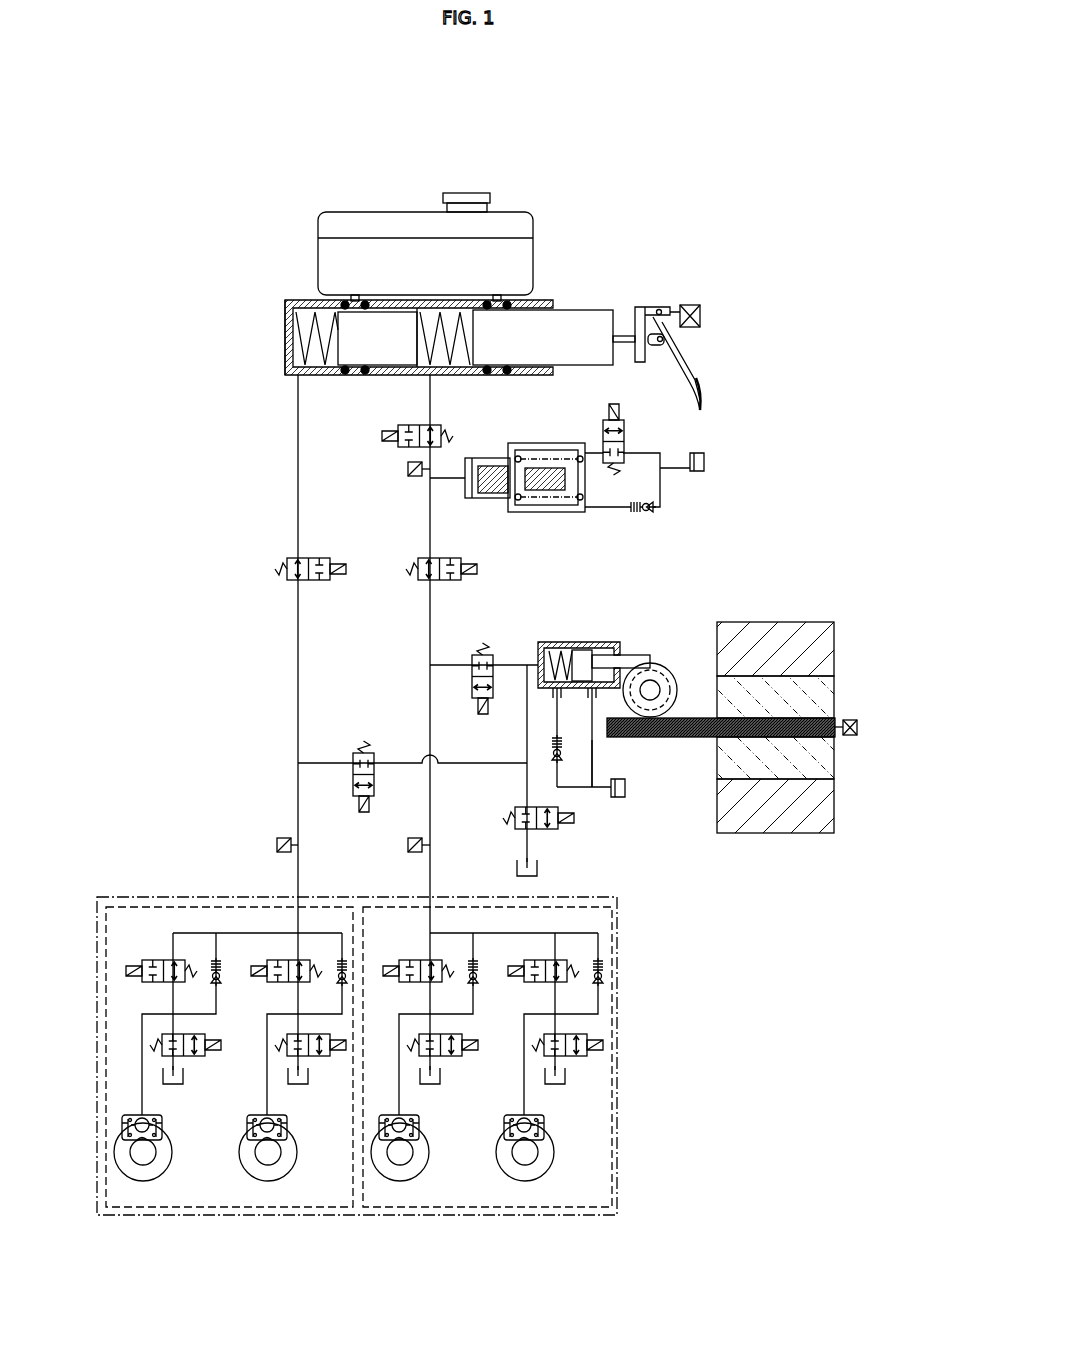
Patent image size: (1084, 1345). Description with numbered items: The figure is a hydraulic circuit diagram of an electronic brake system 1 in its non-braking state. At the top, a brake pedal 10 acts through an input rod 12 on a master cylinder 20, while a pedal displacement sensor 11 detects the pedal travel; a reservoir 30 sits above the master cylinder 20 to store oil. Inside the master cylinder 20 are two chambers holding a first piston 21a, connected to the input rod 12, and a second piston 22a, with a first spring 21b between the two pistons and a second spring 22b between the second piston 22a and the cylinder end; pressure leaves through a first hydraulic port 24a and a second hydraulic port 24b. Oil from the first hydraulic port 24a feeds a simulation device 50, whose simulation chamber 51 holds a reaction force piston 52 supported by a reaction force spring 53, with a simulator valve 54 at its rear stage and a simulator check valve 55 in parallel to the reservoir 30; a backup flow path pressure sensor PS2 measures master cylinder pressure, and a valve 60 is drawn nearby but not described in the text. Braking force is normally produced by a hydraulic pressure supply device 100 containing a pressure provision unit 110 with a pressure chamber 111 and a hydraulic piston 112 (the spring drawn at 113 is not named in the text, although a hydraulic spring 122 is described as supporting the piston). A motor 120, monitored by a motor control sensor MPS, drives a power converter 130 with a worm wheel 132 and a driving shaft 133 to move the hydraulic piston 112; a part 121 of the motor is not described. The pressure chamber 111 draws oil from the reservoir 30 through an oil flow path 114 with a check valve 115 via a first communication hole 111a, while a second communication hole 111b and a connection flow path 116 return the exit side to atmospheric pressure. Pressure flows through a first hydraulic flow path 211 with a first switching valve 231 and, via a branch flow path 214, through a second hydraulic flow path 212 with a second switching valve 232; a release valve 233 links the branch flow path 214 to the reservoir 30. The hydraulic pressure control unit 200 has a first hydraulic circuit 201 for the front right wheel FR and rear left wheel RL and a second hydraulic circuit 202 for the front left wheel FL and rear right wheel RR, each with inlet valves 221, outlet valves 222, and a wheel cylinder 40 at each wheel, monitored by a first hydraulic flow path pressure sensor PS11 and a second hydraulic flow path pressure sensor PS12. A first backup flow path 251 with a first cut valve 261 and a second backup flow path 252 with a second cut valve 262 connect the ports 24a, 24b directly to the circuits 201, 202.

The electronic brake system 1 is at (529, 131).
The brake pedal 10 is at (682, 350).
The pedal displacement sensor 11 is at (697, 312).
The input rod 12 is at (626, 334).
The master cylinder 20 is at (296, 300).
The first piston 21a is at (580, 320).
The first spring 21b is at (465, 350).
The second piston 22a is at (360, 370).
The second spring 22b is at (292, 346).
The first hydraulic port 24a is at (422, 376).
The second hydraulic port 24b is at (290, 376).
The reservoir 30 is at (356, 212).
The wheel cylinder 40 is at (163, 1130).
The simulation device 50 is at (560, 464).
The simulation chamber 51 is at (550, 450).
The reaction force piston 52 is at (486, 460).
The reaction force spring 53 is at (520, 445).
The simulator valve 54 is at (626, 425).
The simulator check valve 55 is at (645, 511).
The inspection valve 60 is at (382, 434).
The backup flow path pressure sensor PS2 is at (408, 469).
The hydraulic pressure supply device 100 is at (711, 701).
The pressure provision unit 110 is at (613, 706).
The pressure chamber 111 is at (612, 640).
The first communication hole 111a is at (535, 737).
The second communication hole 111b is at (610, 737).
The hydraulic piston 112 is at (579, 648).
The return spring 113 is at (548, 648).
The oil flow path 114 is at (592, 790).
The check valve 115 is at (555, 762).
The connection flow path 116 is at (594, 759).
The motor 120 is at (813, 710).
The stator 121 is at (832, 805).
The hydraulic spring 122 is at (832, 760).
The power converter 130 is at (695, 705).
The worm wheel 132 is at (668, 672).
The driving shaft 133 is at (630, 660).
The motor control sensor MPS is at (857, 727).
The hydraulic pressure control unit 200 is at (357, 1095).
The first hydraulic circuit 201 is at (430, 1208).
The second hydraulic circuit 202 is at (312, 1208).
The first hydraulic flow path 211 is at (448, 665).
The second hydraulic flow path 212 is at (482, 764).
The branch flow path 214 is at (525, 733).
The inlet valve 221 is at (176, 983).
The outlet valve 222 is at (196, 1058).
The first switching valve 231 is at (497, 655).
The second switching valve 232 is at (356, 742).
The release valve 233 is at (556, 832).
The first backup flow path 251 is at (430, 408).
The second backup flow path 252 is at (298, 464).
The first cut valve 261 is at (455, 558).
The second cut valve 262 is at (275, 570).
The first hydraulic flow path pressure sensor PS11 is at (408, 846).
The second hydraulic flow path pressure sensor PS12 is at (277, 842).
The rear right wheel RR is at (142, 1194).
The front left wheel FL is at (268, 1194).
The rear left wheel RL is at (400, 1194).
The front right wheel FR is at (525, 1194).